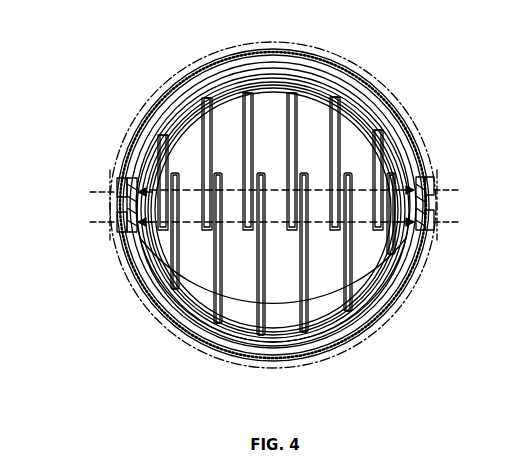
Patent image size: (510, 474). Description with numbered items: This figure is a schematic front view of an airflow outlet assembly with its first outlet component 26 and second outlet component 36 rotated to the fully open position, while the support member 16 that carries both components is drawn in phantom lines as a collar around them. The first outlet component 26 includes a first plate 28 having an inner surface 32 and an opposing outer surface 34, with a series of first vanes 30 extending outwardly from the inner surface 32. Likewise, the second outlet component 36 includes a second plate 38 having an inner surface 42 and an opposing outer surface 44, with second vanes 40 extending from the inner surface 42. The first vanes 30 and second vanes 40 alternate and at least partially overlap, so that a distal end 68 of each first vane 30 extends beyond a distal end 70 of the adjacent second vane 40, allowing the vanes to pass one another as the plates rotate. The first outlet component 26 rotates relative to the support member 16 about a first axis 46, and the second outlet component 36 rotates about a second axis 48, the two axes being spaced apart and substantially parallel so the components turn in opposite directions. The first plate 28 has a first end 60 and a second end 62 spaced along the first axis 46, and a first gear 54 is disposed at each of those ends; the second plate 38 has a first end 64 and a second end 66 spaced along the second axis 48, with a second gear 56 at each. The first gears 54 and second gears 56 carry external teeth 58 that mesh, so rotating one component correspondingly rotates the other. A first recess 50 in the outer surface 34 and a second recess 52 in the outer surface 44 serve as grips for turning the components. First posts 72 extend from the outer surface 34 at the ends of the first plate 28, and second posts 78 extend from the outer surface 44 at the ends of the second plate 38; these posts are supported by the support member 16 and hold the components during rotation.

The support member 16 is at (232, 60).
The first outlet component 26 is at (148, 118).
The first plate 28 is at (398, 122).
The first vane 30 is at (340, 116).
The inner surface 32 is at (190, 92).
The outer surface 34 is at (270, 63).
The second outlet component 36 is at (150, 308).
The second plate 38 is at (306, 335).
The second vane 40 is at (192, 342).
The inner surface 42 is at (360, 318).
The outer surface 44 is at (176, 332).
The first axis 46 is at (95, 180).
The second axis 48 is at (95, 220).
The first recess 50 is at (285, 72).
The second recess 52 is at (276, 356).
The first gear 54 is at (178, 176).
The second gear 56 is at (180, 236).
The external teeth 58 is at (218, 176).
The first end 60 is at (133, 172).
The second end 62 is at (424, 166).
The first end 64 is at (130, 248).
The second end 66 is at (420, 240).
The distal end 68 is at (291, 242).
The distal end 70 is at (260, 176).
The first post 72 is at (112, 178).
The second post 78 is at (118, 232).